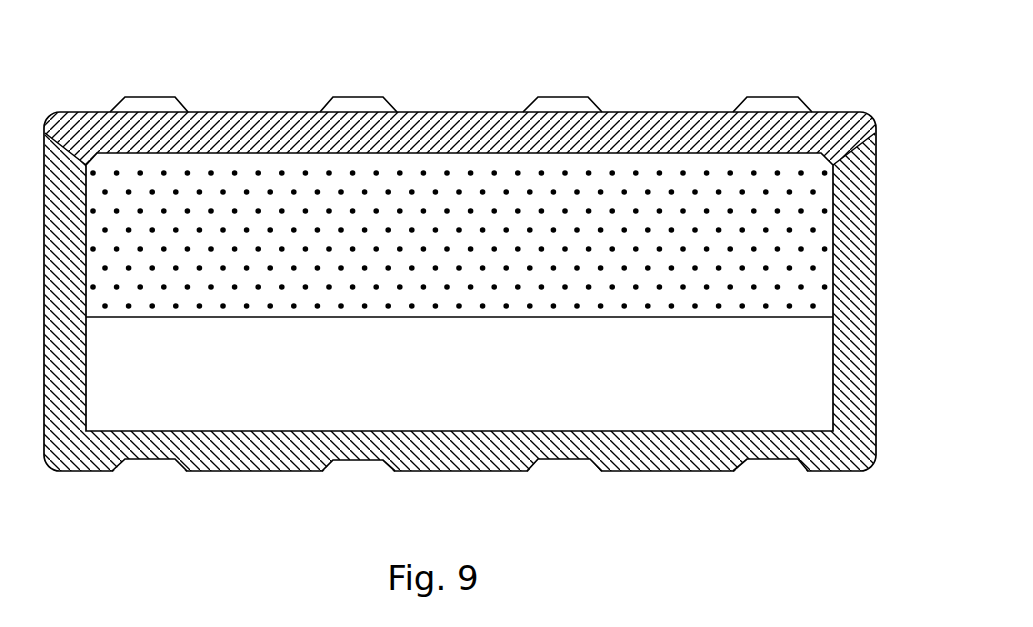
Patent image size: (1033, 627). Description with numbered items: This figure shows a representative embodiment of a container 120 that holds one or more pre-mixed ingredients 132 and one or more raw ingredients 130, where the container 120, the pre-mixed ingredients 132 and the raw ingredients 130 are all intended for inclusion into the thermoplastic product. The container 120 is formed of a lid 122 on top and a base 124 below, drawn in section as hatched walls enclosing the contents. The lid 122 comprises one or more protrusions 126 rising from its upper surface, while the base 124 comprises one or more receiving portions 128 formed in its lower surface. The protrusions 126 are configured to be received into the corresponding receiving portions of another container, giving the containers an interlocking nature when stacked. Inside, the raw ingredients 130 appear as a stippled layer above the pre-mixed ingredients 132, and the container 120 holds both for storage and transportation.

The container 120 is at (693, 100).
The lid 122 is at (482, 135).
The base 124 is at (647, 453).
The protrusions 126 is at (358, 104).
The receiving portions 128 is at (358, 466).
The raw ingredients 130 is at (232, 185).
The pre-mixed ingredients 132 is at (502, 393).